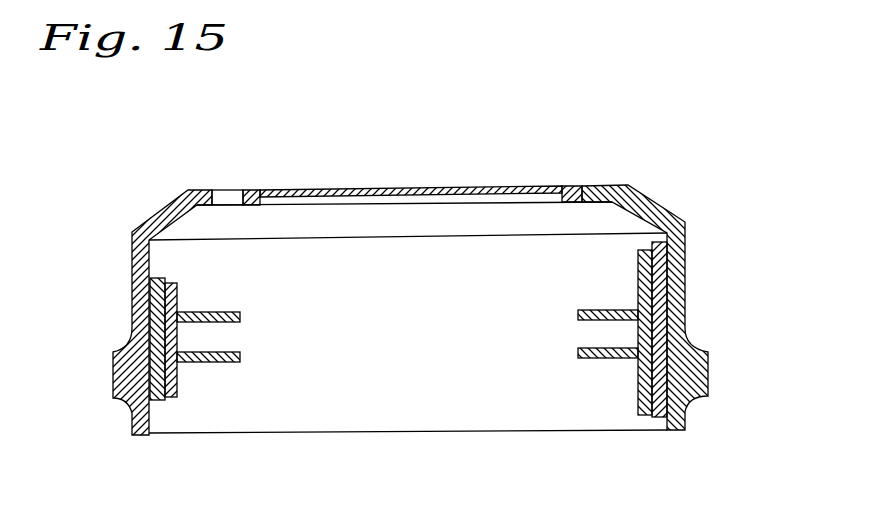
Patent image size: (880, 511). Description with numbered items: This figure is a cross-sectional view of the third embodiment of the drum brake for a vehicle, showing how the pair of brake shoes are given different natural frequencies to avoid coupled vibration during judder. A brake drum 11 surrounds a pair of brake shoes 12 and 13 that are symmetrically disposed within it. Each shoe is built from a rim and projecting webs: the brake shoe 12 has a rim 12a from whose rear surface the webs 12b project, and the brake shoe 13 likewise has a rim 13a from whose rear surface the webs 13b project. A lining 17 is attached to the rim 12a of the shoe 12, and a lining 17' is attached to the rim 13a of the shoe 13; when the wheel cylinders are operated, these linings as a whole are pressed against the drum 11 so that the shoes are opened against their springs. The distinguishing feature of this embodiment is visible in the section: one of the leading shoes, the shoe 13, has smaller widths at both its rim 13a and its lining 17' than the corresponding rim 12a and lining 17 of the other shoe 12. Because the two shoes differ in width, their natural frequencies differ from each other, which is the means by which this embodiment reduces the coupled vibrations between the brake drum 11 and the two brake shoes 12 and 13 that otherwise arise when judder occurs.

The brake drum 11 is at (655, 206).
The brake shoe 12 is at (582, 315).
The rim 12a is at (668, 282).
The webs 12b is at (595, 305).
The brake shoe 13 is at (239, 315).
The rim 13a is at (152, 279).
The webs 13b is at (223, 310).
The lining 17 is at (702, 326).
The lining 17' is at (106, 327).